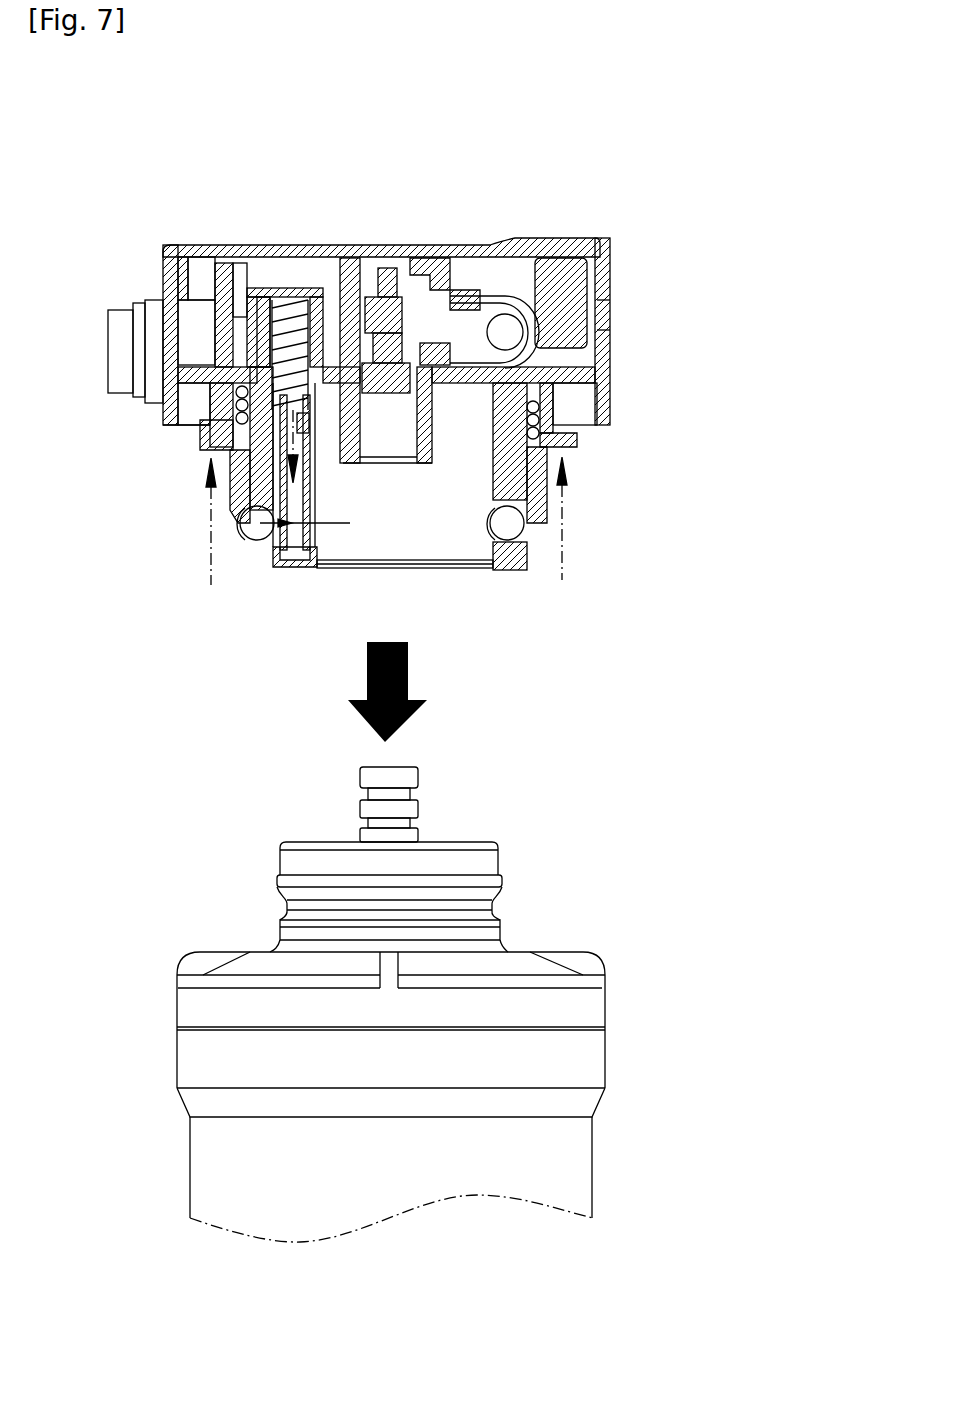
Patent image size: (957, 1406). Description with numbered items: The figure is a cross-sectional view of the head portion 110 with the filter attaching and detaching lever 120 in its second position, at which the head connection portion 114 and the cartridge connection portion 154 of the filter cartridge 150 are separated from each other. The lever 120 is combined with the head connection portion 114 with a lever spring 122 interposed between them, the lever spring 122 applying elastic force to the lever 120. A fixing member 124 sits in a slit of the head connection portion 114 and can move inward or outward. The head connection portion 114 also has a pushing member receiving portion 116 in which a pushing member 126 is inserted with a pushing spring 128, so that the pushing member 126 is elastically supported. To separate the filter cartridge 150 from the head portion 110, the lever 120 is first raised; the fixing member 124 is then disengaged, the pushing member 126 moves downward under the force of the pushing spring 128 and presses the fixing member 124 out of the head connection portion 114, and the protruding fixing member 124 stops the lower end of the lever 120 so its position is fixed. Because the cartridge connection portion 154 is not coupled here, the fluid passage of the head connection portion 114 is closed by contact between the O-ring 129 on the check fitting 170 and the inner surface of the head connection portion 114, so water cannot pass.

The head portion 110 is at (632, 372).
The head connection portion 114 is at (528, 590).
The pushing member receiving portion 116 is at (318, 450).
The filter attaching and detaching lever 120 is at (215, 518).
The lever spring 122 is at (200, 426).
The fixing member 124 is at (248, 540).
The pushing member 126 is at (325, 528).
The pushing spring 128 is at (296, 300).
The O-ring 129 is at (423, 357).
The check fitting 170 is at (388, 268).
The filter cartridge 150 is at (628, 1166).
The cartridge connection portion 154 is at (537, 853).